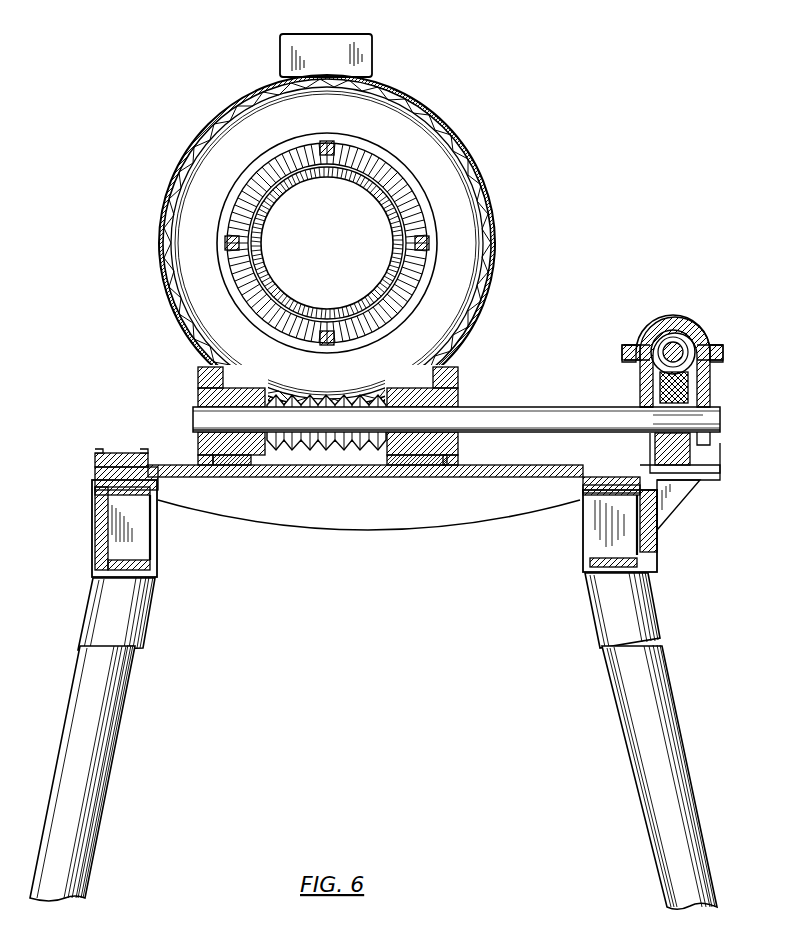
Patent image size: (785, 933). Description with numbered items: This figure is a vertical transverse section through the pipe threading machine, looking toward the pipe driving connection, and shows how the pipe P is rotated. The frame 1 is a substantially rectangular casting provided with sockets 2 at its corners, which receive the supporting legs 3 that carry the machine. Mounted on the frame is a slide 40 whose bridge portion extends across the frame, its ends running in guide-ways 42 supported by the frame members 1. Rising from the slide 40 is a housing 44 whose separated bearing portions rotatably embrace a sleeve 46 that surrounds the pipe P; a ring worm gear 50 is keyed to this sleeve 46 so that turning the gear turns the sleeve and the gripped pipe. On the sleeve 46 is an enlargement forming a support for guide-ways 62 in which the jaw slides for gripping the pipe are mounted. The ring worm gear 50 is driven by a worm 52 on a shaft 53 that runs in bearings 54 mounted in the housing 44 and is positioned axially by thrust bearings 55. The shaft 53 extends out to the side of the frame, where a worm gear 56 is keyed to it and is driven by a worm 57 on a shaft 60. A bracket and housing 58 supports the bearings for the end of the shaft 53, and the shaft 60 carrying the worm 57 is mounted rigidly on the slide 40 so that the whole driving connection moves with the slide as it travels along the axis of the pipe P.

The frame 1 is at (100, 548).
The socket 2 is at (136, 606).
The supporting leg 3 is at (115, 722).
The slide 40 is at (235, 478).
The guide-way 42 is at (95, 462).
The housing 44 is at (215, 144).
The sleeve 46 is at (418, 224).
The ring worm gear 50 is at (190, 212).
The worm 52 is at (356, 450).
The shaft 53 is at (515, 420).
The bearing 54 is at (196, 391).
The thrust bearing 55 is at (248, 477).
The worm gear 56 is at (698, 390).
The worm 57 is at (695, 336).
The bracket and housing 58 is at (686, 480).
The shaft 60 is at (657, 340).
The guide-way 62 is at (280, 60).
The pipe P is at (391, 223).